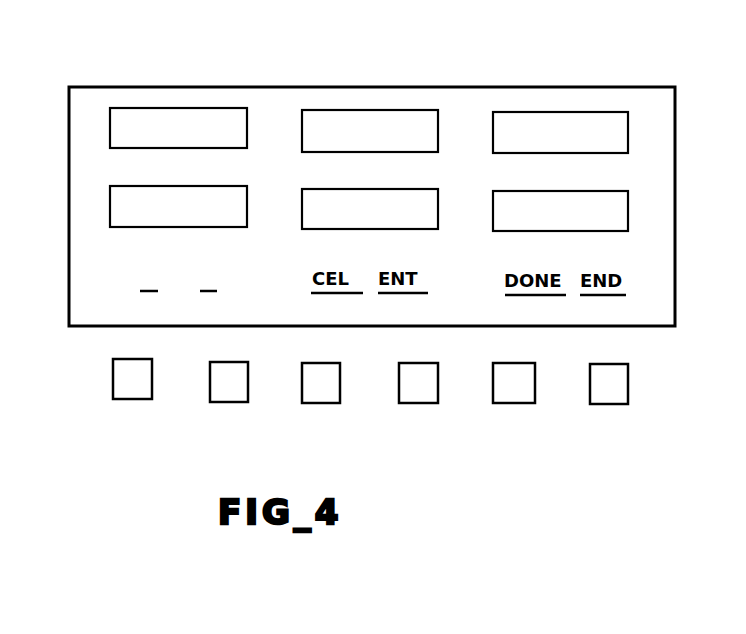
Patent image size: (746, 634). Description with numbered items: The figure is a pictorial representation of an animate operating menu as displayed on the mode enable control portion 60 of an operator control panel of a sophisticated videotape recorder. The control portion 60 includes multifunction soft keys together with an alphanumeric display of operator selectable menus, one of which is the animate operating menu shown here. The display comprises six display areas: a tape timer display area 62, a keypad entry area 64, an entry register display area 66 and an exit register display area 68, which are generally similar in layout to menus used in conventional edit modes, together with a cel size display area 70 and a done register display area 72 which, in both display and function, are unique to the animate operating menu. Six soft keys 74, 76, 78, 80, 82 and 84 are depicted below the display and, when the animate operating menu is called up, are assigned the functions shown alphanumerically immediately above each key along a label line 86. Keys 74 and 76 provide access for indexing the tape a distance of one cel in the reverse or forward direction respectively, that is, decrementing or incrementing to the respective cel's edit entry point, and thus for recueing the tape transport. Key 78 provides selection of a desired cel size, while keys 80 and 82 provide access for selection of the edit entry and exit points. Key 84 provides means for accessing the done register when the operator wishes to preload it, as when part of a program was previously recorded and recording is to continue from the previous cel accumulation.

The mode enable control portion 60 is at (497, 60).
The tape timer display area 62 is at (162, 104).
The keypad entry area 64 is at (178, 184).
The entry register display area 66 is at (367, 107).
The exit register display area 68 is at (574, 110).
The cel size display area 70 is at (369, 187).
The done register display area 72 is at (569, 189).
The soft key 74 is at (135, 399).
The soft key 76 is at (231, 402).
The soft key 78 is at (323, 403).
The soft key 80 is at (415, 403).
The soft key 82 is at (510, 403).
The soft key 84 is at (608, 404).
The label line 86 is at (120, 277).